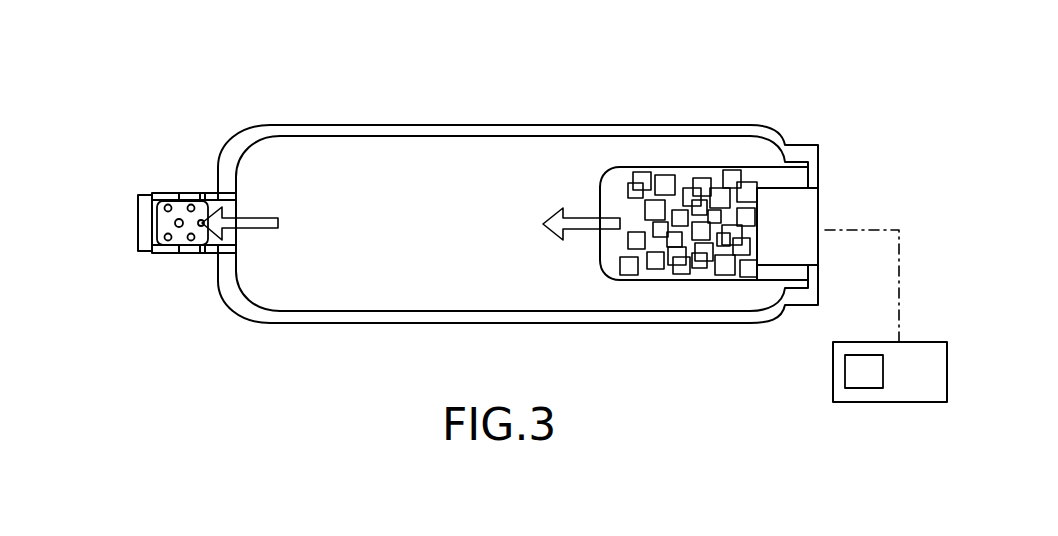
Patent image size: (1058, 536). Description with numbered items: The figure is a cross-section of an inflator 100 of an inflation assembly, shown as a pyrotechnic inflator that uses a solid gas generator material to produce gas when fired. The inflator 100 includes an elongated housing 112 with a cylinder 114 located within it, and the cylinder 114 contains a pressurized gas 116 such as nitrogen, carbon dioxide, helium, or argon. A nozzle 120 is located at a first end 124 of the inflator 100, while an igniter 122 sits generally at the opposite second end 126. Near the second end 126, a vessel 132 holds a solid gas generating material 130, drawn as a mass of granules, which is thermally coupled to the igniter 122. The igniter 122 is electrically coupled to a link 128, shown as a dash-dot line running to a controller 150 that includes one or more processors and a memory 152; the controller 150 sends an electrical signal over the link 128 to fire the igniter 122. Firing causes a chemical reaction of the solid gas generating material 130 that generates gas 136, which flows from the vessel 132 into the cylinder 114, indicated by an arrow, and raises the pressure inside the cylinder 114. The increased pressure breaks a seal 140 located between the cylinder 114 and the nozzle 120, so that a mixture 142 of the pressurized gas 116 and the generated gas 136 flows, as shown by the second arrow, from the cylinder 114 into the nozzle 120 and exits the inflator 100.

The inflator 100 is at (763, 66).
The housing 112 is at (585, 134).
The cylinder 114 is at (412, 157).
The pressurized gas 116 is at (472, 237).
The nozzle 120 is at (162, 195).
The igniter 122 is at (786, 237).
The first end 124 is at (129, 185).
The second end 126 is at (827, 159).
The link 128 is at (870, 286).
The solid gas generating material 130 is at (699, 264).
The vessel 132 is at (695, 165).
The gas 136 is at (582, 230).
The seal 140 is at (236, 208).
The mixture 142 is at (260, 226).
The controller 150 is at (925, 386).
The memory 152 is at (880, 385).